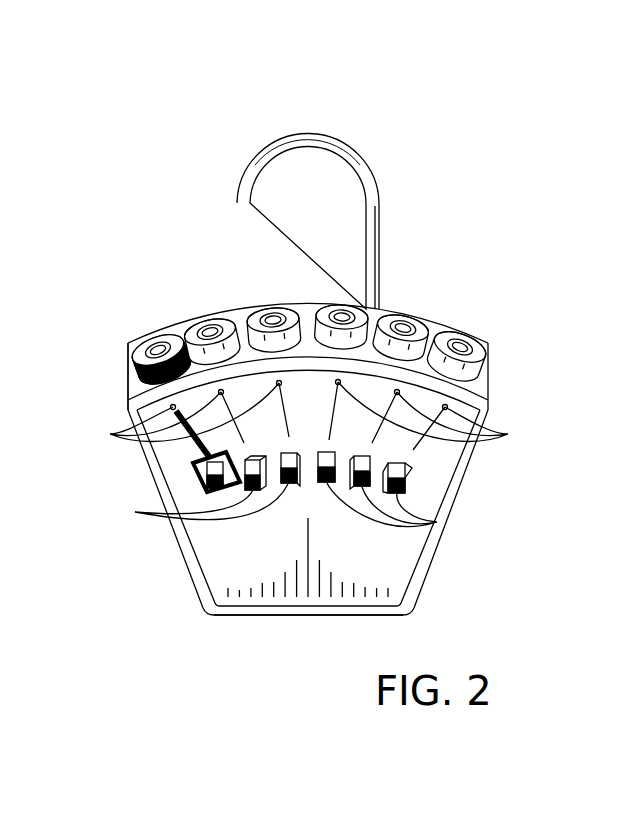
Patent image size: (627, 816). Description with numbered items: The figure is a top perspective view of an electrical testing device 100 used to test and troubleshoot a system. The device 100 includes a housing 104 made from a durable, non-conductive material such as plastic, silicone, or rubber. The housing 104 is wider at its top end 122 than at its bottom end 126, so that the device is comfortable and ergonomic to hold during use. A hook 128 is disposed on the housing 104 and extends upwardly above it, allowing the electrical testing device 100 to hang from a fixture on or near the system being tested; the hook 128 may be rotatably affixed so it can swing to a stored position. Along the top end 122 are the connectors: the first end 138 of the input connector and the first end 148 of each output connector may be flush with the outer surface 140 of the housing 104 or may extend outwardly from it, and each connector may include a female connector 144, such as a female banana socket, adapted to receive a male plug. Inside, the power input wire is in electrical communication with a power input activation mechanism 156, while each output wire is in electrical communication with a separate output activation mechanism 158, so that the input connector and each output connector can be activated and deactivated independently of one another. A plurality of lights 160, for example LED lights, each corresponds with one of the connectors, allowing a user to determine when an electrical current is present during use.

The electrical testing device 100 is at (525, 118).
The housing 104 is at (400, 565).
The top end 122 is at (488, 382).
The bottom end 126 is at (405, 614).
The hook 128 is at (380, 203).
The first end of the input connector 138 is at (180, 322).
The outer surface 140 is at (128, 382).
The female connector 144 is at (152, 333).
The first end of the output connector 148 is at (302, 318).
The power input activation mechanism 156 is at (200, 492).
The output activation mechanism 158 is at (180, 516).
The plurality of lights 160 is at (110, 434).